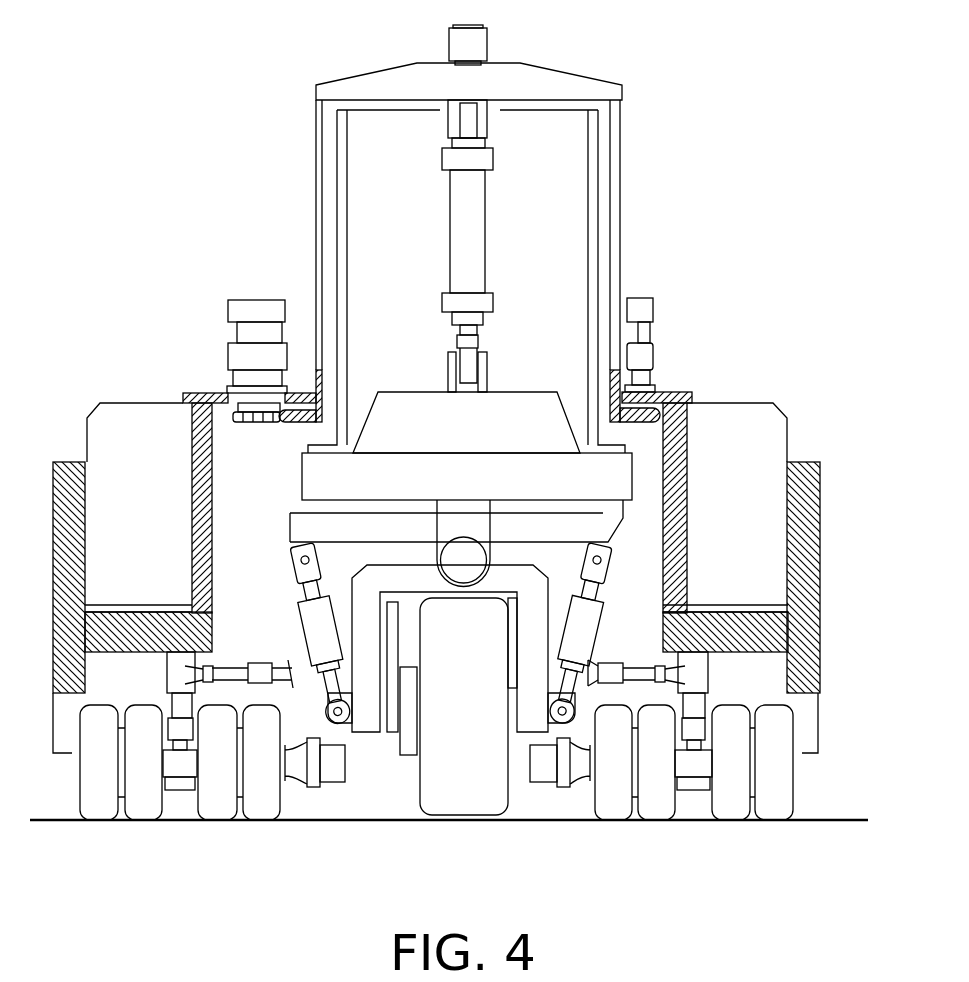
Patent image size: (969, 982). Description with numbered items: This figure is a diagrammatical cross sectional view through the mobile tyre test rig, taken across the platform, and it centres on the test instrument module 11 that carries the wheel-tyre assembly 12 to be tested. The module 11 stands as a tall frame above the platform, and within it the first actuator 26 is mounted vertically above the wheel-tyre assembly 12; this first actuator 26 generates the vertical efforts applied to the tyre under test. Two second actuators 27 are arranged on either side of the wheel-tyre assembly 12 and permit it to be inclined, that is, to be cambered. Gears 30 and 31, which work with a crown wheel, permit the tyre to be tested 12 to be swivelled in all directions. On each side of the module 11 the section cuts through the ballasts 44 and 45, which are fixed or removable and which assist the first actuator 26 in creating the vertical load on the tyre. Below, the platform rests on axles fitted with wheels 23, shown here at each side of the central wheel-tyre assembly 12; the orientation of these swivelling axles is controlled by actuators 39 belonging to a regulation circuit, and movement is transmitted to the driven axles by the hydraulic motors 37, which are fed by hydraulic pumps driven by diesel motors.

The test instrument module 11 is at (545, 165).
The wheel-tyre assembly 12 is at (455, 803).
The caster wheels 23 is at (217, 803).
The first actuator 26 is at (473, 230).
The second actuator 27 is at (308, 592).
The gear 30 is at (240, 313).
The gear 31 is at (643, 308).
The hydraulic motor 37 is at (332, 770).
The actuator 39 is at (258, 678).
The ballast 44 is at (192, 422).
The ballast 45 is at (68, 462).